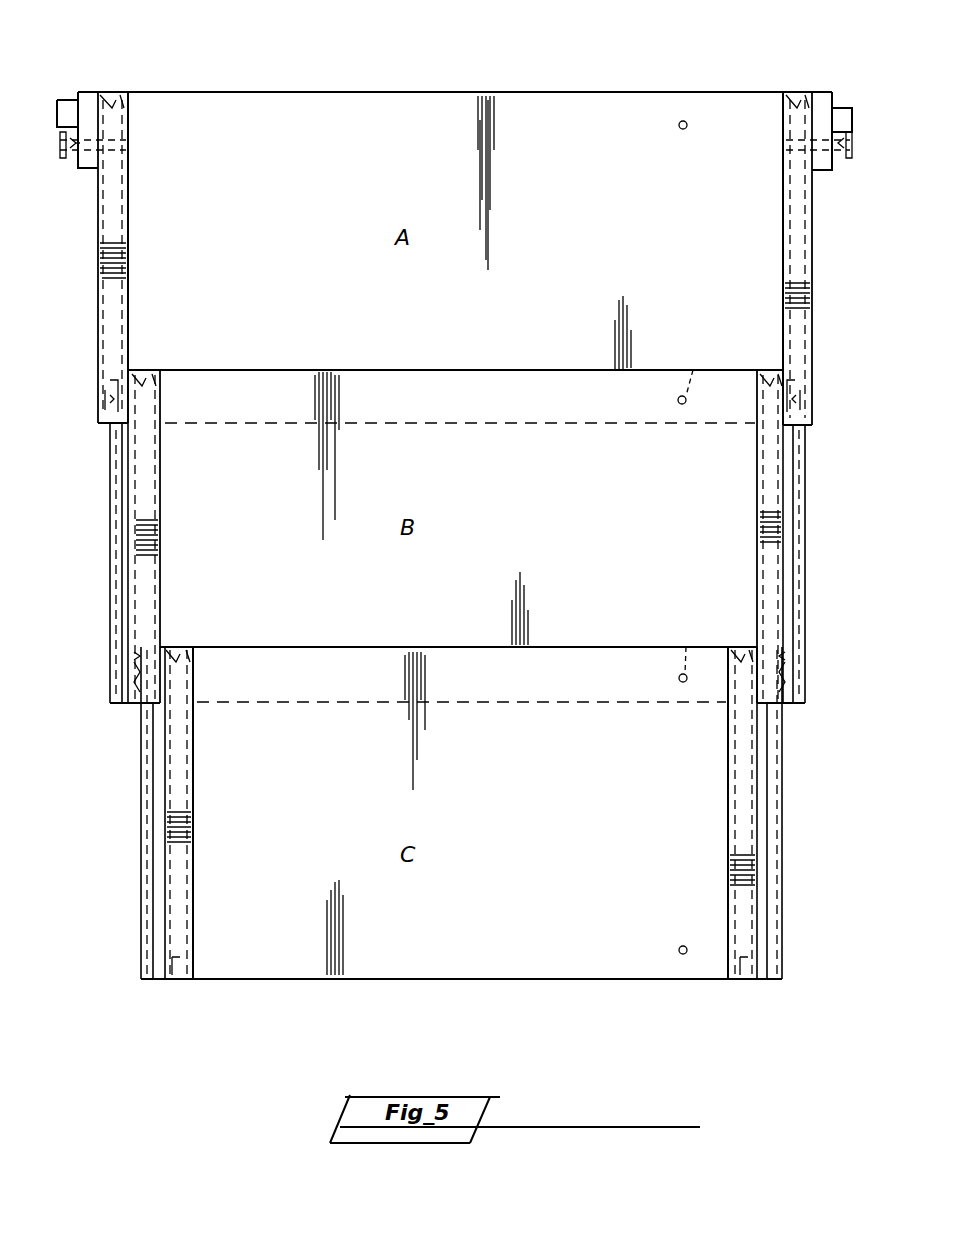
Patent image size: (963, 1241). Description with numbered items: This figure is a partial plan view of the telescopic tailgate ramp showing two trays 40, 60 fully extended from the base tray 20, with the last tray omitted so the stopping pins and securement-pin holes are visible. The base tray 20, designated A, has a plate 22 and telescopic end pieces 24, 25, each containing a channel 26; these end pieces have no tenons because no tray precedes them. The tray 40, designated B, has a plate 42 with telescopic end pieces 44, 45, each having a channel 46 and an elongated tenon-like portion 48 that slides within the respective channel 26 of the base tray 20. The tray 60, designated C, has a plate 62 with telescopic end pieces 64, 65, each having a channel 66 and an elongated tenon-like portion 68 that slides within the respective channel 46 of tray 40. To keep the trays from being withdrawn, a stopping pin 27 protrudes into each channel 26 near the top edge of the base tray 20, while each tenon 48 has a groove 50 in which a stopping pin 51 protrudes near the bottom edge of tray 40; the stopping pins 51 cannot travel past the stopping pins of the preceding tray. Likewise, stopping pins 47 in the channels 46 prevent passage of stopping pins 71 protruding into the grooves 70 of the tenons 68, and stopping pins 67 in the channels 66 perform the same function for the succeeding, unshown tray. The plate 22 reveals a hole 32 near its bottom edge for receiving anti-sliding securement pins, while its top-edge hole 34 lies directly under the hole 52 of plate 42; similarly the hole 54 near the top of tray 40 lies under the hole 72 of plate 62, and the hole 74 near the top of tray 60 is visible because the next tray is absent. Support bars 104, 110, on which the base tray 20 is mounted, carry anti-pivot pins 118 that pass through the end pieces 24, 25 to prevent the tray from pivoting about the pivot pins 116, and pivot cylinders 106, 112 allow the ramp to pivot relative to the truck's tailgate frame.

The base tray 20 is at (60, 322).
The plate 22 is at (428, 115).
The telescopic end piece 24 is at (100, 105).
The telescopic end piece 25 is at (808, 95).
The channel 26 is at (105, 110).
The stopping pin 27 is at (100, 420).
The hole 32 is at (682, 126).
The hole 34 is at (693, 370).
The tray 40 is at (78, 507).
The plate 42 is at (562, 533).
The telescopic end piece 44 is at (116, 705).
The telescopic end piece 45 is at (805, 705).
The channel 46 is at (142, 385).
The stopping pin 47 is at (134, 690).
The elongated tenon-like portion 48 is at (112, 464).
The groove 50 is at (112, 598).
The stopping pin 51 is at (104, 395).
The hole 52 is at (678, 400).
The hole 54 is at (686, 647).
The tray 60 is at (103, 865).
The plate 62 is at (562, 825).
The telescopic end piece 64 is at (140, 979).
The telescopic end piece 65 is at (782, 979).
The channel 66 is at (174, 660).
The stopping pin 67 is at (175, 978).
The elongated tenon-like portion 68 is at (145, 778).
The groove 70 is at (145, 880).
The stopping pin 71 is at (136, 668).
The hole 72 is at (679, 678).
The hole 74 is at (680, 948).
The support bar 104 is at (80, 108).
The pivot cylinder 106 is at (60, 98).
The support bar 110 is at (830, 96).
The pivot cylinder 112 is at (846, 108).
The pivot pin 116 is at (74, 152).
The anti-pivot pin 118 is at (66, 148).